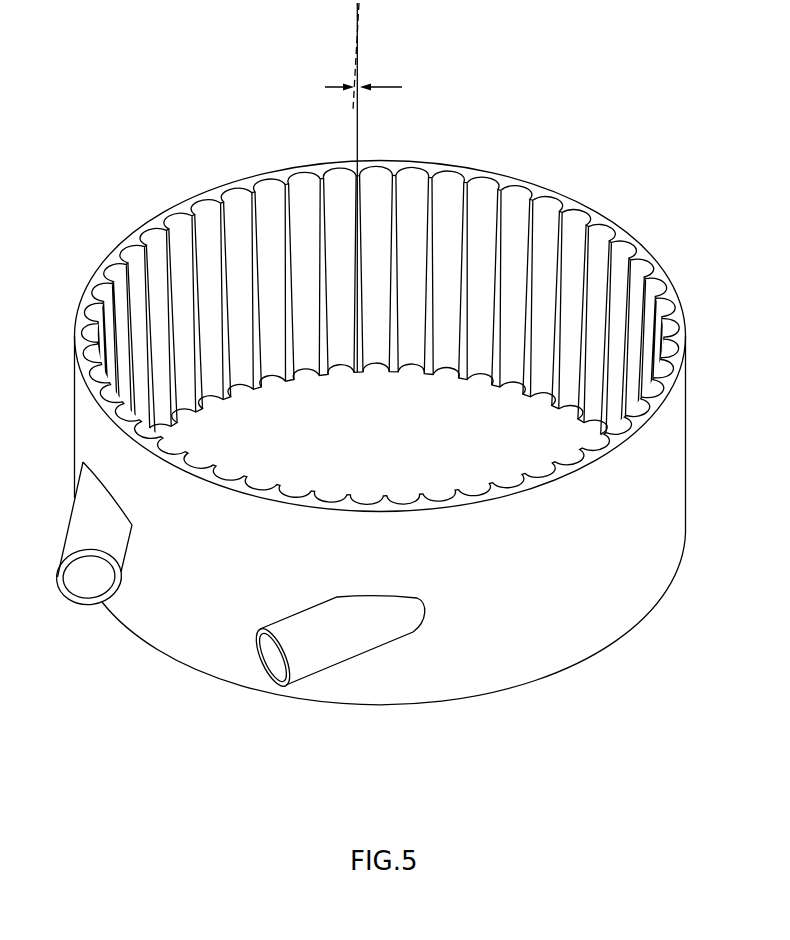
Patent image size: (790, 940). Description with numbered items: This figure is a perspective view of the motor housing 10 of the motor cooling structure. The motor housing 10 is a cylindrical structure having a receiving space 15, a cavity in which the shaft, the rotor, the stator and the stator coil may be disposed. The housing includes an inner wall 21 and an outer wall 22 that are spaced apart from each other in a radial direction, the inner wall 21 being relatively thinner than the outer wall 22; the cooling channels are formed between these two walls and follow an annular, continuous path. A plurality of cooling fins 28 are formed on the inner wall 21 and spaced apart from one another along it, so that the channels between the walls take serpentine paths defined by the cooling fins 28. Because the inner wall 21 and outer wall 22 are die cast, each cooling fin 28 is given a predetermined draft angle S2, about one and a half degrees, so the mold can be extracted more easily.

The motor housing 10 is at (620, 142).
The receiving space 15 is at (466, 441).
The inner wall 21 is at (385, 383).
The outer wall 22 is at (473, 166).
The cooling fins 28 is at (338, 178).
The draft angle S2 is at (367, 187).